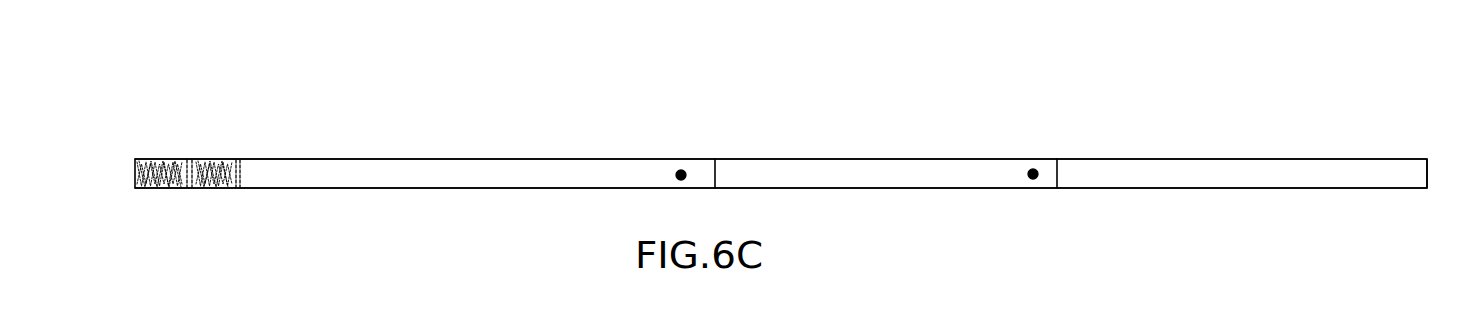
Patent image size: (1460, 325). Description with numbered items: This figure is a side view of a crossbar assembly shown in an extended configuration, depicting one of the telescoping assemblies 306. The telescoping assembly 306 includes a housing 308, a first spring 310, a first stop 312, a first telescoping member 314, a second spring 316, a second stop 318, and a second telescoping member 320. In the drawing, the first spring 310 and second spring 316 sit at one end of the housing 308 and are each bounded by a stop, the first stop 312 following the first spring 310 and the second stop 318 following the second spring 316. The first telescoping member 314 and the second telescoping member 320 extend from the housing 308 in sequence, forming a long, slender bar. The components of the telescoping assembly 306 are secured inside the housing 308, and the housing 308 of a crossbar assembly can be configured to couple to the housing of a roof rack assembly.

The telescoping assembly 306 is at (688, 111).
The housing 308 is at (420, 158).
The first spring 310 is at (157, 167).
The first stop 312 is at (193, 188).
The first telescoping member 314 is at (890, 158).
The second spring 316 is at (210, 167).
The second stop 318 is at (240, 188).
The second telescoping member 320 is at (1212, 159).